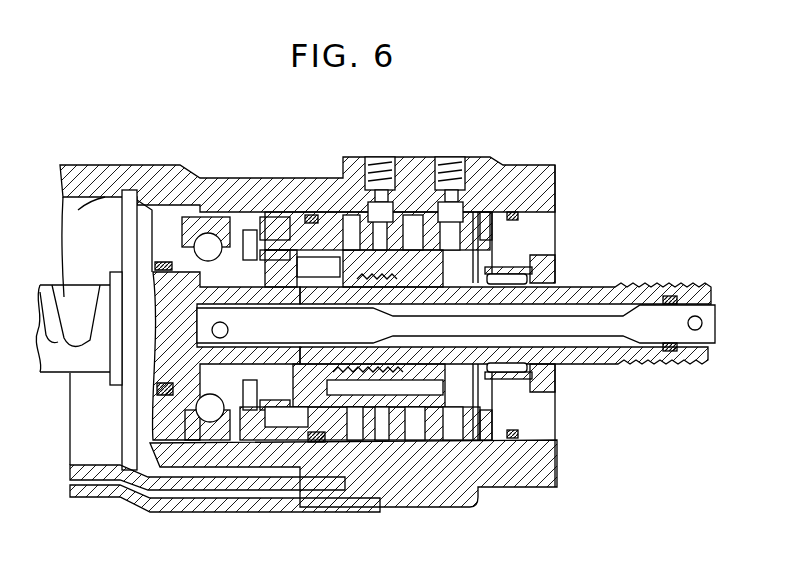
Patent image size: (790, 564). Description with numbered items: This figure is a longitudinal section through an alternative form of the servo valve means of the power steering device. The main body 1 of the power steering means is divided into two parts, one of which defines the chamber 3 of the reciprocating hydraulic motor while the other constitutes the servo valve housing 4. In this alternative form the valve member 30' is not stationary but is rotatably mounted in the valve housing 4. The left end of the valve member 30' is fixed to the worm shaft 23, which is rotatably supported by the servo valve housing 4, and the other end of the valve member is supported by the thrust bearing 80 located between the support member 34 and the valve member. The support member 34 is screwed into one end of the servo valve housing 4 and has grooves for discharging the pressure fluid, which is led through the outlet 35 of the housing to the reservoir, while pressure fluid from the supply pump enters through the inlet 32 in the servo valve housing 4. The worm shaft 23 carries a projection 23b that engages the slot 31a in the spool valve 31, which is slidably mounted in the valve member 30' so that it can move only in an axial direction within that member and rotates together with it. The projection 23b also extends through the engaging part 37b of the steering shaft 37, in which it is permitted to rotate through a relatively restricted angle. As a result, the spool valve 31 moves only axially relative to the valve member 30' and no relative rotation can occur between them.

The main body 1 is at (95, 180).
The chamber 3 is at (93, 330).
The servo valve housing 4 is at (336, 442).
The worm shaft 23 is at (105, 362).
The projection 23b is at (315, 280).
The valve member 30' is at (293, 481).
The spool valve 31 is at (398, 434).
The slot 31a is at (340, 257).
The inlet 32 is at (392, 157).
The support member 34 is at (553, 230).
The outlet 35 is at (460, 157).
The steering shaft 37 is at (587, 366).
The engaging part 37b is at (305, 258).
The thrust bearing 80 is at (488, 437).